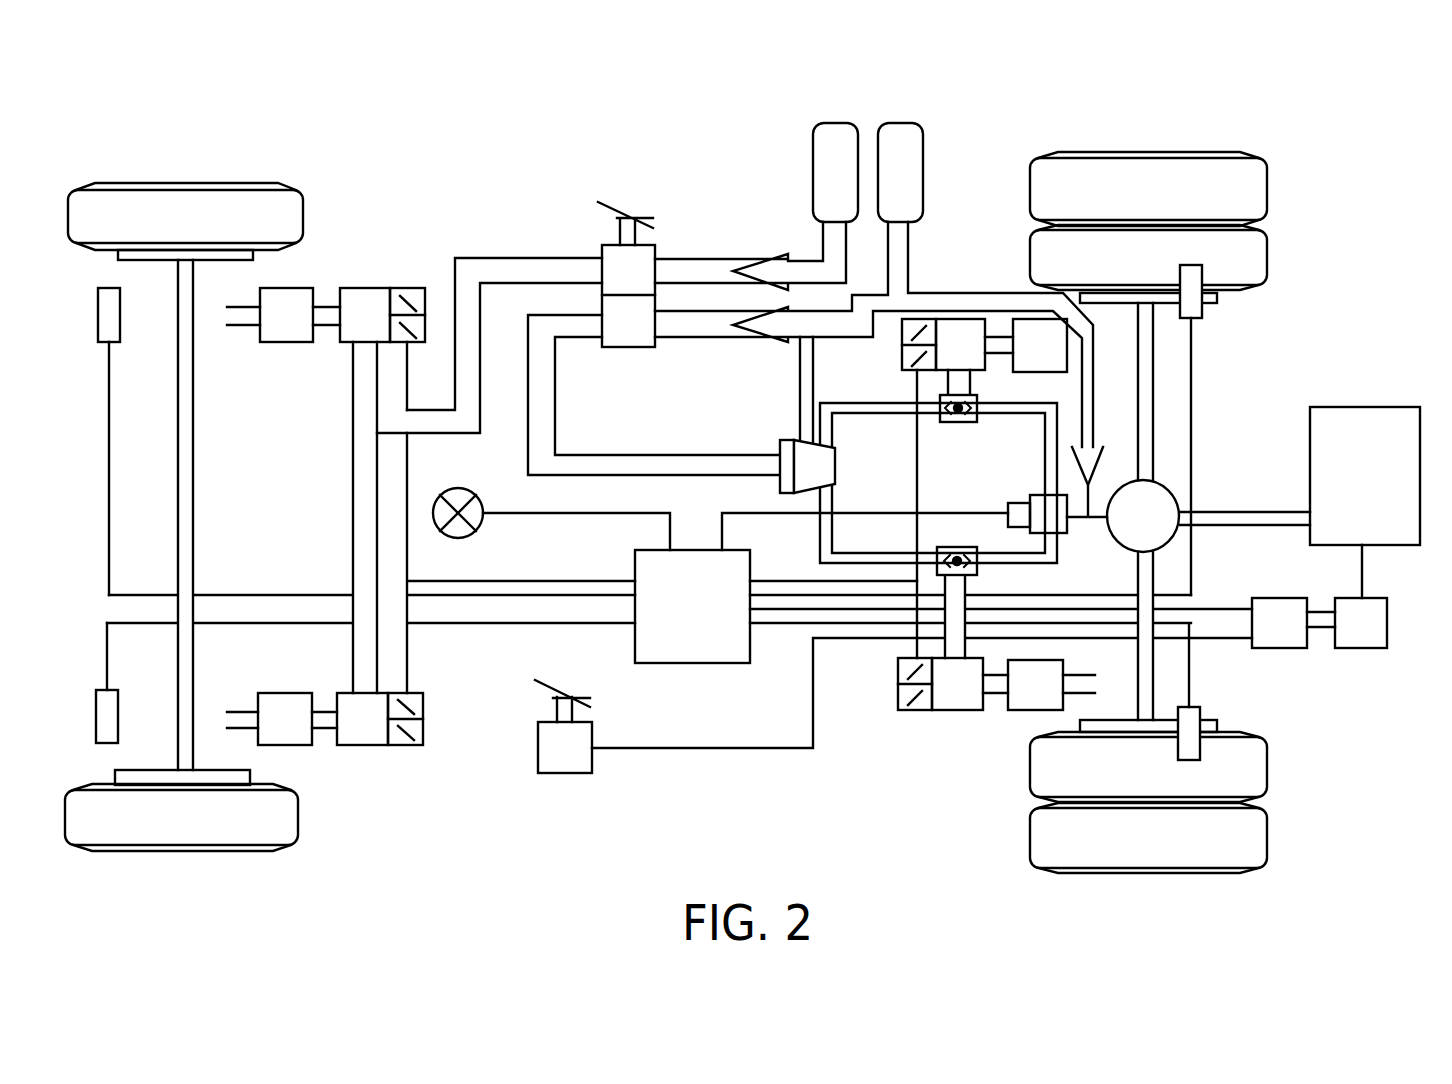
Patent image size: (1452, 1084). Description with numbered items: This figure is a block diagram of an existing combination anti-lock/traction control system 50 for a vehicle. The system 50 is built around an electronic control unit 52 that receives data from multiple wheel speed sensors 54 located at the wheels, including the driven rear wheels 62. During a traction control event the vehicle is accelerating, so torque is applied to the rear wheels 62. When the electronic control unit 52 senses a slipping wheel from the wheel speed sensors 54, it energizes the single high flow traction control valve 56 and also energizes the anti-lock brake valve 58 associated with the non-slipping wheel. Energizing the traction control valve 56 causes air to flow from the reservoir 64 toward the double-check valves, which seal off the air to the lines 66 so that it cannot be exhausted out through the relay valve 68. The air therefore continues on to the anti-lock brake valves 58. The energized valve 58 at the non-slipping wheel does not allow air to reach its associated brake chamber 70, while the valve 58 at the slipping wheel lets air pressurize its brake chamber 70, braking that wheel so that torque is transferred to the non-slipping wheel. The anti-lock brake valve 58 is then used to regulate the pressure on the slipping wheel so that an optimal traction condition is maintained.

The combination anti-lock/traction control system 50 is at (402, 124).
The electronic control unit 52 is at (703, 655).
The wheel speed sensors 54 is at (122, 322).
The high flow traction control valve 56 is at (1067, 527).
The anti-lock brake valves 58 is at (378, 298).
The rear wheels 62 is at (1245, 188).
The reservoir 64 is at (923, 140).
The lines 66 is at (857, 402).
The relay valve 68 is at (785, 444).
The brake chamber 70 is at (284, 334).